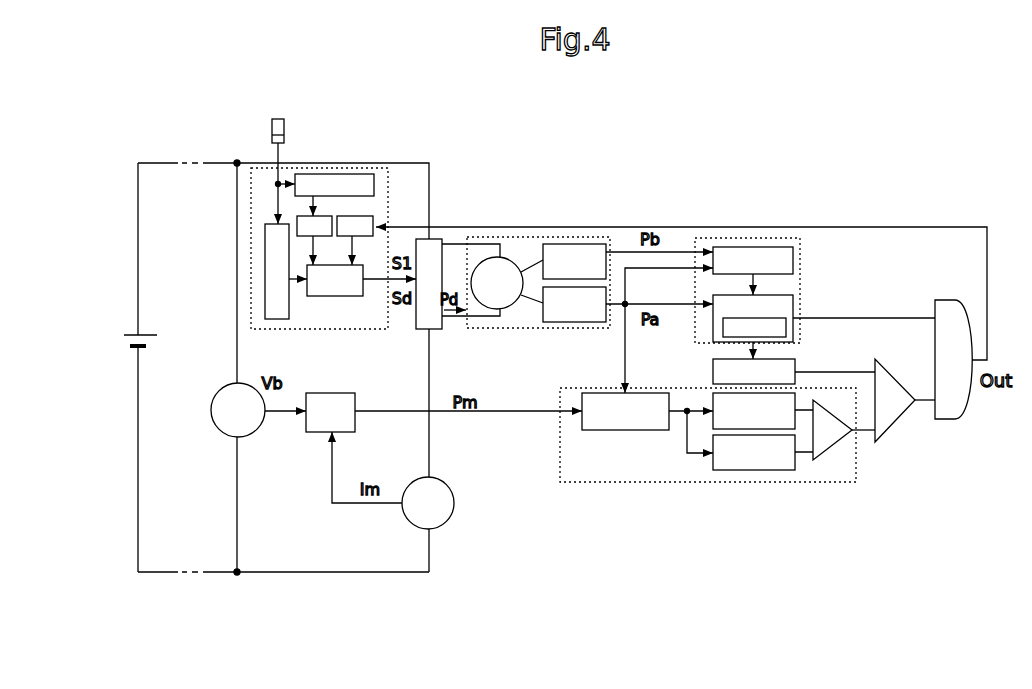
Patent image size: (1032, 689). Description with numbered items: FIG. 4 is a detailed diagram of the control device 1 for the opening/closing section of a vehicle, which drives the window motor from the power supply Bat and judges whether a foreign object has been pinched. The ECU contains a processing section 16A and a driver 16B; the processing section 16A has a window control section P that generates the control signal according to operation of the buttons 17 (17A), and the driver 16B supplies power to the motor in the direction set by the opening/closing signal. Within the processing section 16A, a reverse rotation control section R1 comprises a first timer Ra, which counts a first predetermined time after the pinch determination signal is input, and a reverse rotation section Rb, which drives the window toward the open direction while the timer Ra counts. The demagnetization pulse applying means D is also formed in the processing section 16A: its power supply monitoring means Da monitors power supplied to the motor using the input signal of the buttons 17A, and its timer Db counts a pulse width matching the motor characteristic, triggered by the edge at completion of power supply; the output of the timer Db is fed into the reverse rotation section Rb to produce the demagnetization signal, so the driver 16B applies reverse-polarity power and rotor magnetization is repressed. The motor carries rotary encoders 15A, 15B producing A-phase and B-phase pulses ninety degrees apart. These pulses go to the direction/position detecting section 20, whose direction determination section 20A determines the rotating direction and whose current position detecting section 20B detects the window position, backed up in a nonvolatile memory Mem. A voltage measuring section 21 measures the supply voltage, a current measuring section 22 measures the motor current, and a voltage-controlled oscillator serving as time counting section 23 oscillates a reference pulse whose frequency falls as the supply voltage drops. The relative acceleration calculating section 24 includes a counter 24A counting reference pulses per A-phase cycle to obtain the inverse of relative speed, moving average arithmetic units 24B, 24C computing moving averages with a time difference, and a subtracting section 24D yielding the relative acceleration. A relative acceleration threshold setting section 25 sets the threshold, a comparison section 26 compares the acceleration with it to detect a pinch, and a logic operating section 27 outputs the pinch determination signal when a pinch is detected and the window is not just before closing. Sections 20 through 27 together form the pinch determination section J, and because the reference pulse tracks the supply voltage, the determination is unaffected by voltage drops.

The control device 1 is at (882, 133).
The battery Bat is at (132, 334).
The processing section 16A is at (253, 262).
The window control section P is at (269, 222).
The switch 17 is at (260, 153).
The buttons 17A is at (271, 121).
The demagnetization pulse applying means D is at (334, 159).
The power supply monitoring means Da is at (309, 173).
The timer Db is at (329, 216).
The reverse rotation control section R1 is at (372, 189).
The first timer Ra is at (354, 216).
The reverse rotation section Rb is at (364, 265).
The driver 16B is at (441, 239).
The rotary encoder 15A is at (540, 296).
The rotary encoder 15B is at (575, 244).
The direction/position detecting section 20 is at (758, 253).
The direction determination section 20A is at (720, 247).
The current position detecting section 20B is at (778, 252).
The nonvolatile memory Mem is at (728, 318).
The relative acceleration threshold setting section 25 is at (810, 359).
The comparison section 26 is at (893, 425).
The logic operating section 27 is at (968, 400).
The voltage measuring section 21 is at (212, 405).
The VCO 23 is at (310, 433).
The current measuring section 22 is at (444, 523).
The relative acceleration calculating section 24 is at (733, 466).
The counter 24A is at (623, 430).
The moving average arithmetic unit 24B is at (713, 418).
The moving average arithmetic unit 24C is at (757, 470).
The subtracting section 24D is at (816, 460).
The pinch determination section J is at (864, 470).